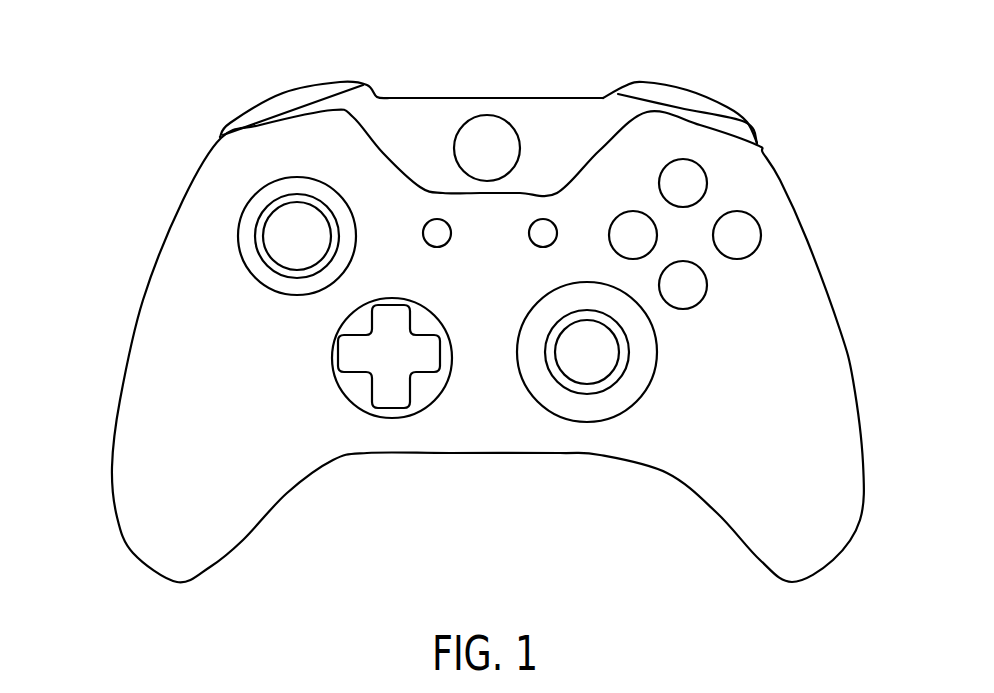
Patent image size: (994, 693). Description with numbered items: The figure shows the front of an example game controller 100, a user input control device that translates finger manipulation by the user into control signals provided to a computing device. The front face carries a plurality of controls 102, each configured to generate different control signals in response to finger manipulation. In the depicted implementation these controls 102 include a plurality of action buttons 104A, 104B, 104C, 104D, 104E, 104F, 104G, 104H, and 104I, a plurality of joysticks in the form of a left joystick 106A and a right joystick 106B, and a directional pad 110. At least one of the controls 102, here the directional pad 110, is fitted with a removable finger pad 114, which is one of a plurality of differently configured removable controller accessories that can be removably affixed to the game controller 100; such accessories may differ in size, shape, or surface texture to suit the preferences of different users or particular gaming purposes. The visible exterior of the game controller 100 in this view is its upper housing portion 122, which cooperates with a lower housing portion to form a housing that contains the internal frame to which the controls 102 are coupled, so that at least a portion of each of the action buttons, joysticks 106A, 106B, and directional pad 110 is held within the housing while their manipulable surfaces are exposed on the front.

The game controller 100 is at (146, 40).
The plurality of controls 102 is at (802, 145).
The action button 104A is at (322, 80).
The action button 104B is at (685, 90).
The action button 104C is at (610, 232).
The action button 104D is at (708, 288).
The action button 104E is at (760, 236).
The action button 104F is at (660, 178).
The action button 104G is at (435, 248).
The action button 104H is at (545, 248).
The action button 104I is at (460, 128).
The left joystick 106A is at (290, 275).
The right joystick 106B is at (603, 387).
The directional pad 110 is at (309, 413).
The removable finger pad 114 is at (418, 373).
The upper housing portion 122 is at (128, 348).